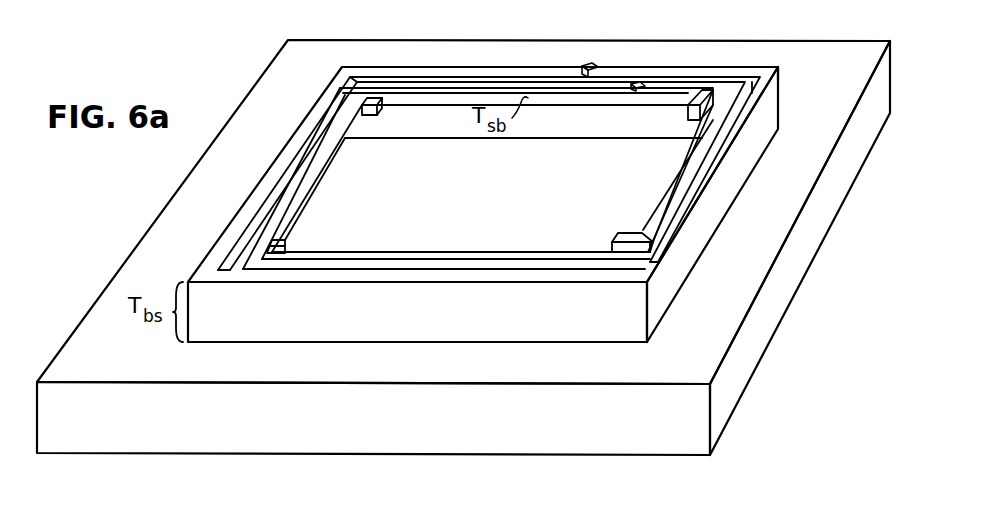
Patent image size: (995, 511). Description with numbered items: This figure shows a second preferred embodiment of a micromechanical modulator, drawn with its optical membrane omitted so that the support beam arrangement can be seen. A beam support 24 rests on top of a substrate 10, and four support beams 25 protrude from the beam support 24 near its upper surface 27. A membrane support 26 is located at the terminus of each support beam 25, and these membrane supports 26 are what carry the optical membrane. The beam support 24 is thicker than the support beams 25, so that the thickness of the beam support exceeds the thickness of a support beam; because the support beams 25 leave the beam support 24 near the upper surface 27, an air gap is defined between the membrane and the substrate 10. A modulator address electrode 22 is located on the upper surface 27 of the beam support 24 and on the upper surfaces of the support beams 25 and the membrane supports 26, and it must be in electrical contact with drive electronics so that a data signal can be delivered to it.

The substrate 10 is at (699, 363).
The modulator address electrode 22 is at (634, 82).
The beam support 24 is at (436, 323).
The support beam 25 is at (428, 95).
The membrane support 26 is at (636, 234).
The upper surface of the beam support 27 is at (777, 69).